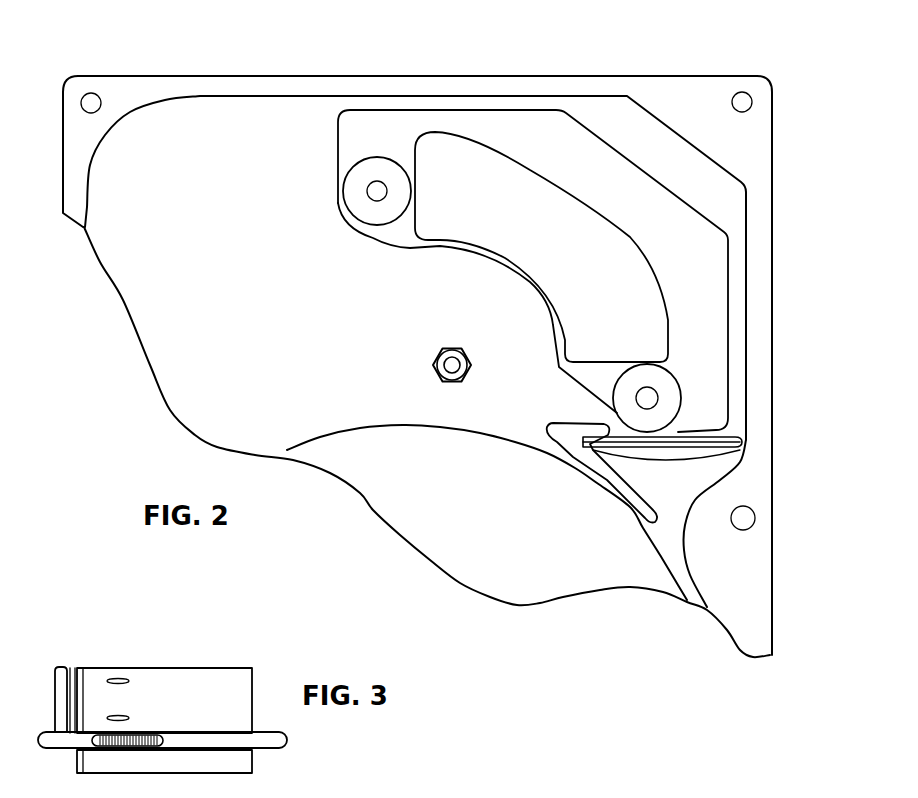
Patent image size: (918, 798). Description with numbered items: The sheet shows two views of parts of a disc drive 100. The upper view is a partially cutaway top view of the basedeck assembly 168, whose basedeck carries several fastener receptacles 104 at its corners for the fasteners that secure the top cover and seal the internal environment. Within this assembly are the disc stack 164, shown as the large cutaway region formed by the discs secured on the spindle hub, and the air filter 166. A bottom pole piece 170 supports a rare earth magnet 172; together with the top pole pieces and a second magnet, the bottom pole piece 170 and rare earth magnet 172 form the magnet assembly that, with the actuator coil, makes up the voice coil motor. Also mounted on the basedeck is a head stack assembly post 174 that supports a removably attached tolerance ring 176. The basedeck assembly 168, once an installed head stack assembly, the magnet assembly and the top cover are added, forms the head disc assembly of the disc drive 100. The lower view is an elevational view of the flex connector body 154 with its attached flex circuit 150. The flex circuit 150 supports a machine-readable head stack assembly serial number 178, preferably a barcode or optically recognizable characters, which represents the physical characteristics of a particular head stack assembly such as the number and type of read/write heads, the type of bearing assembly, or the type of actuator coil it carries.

In FIG. 2, the disc drive 100 is at (613, 797).
In FIG. 2, the fastener receptacles 104 is at (96, 97).
In FIG. 3, the flex circuit 150 is at (252, 677).
In FIG. 3, the flex connector body 154 is at (267, 740).
In FIG. 2, the disc stack 164 is at (372, 488).
In FIG. 2, the air filter 166 is at (692, 450).
In FIG. 2, the basedeck assembly 168 is at (518, 58).
In FIG. 2, the bottom pole piece 170 is at (708, 358).
In FIG. 2, the rare earth magnet 172 is at (628, 290).
In FIG. 2, the head stack assembly post 174 is at (453, 373).
In FIG. 2, the tolerance ring 176 is at (432, 363).
In FIG. 3, the machine-readable head stack assembly serial number 178 is at (85, 733).